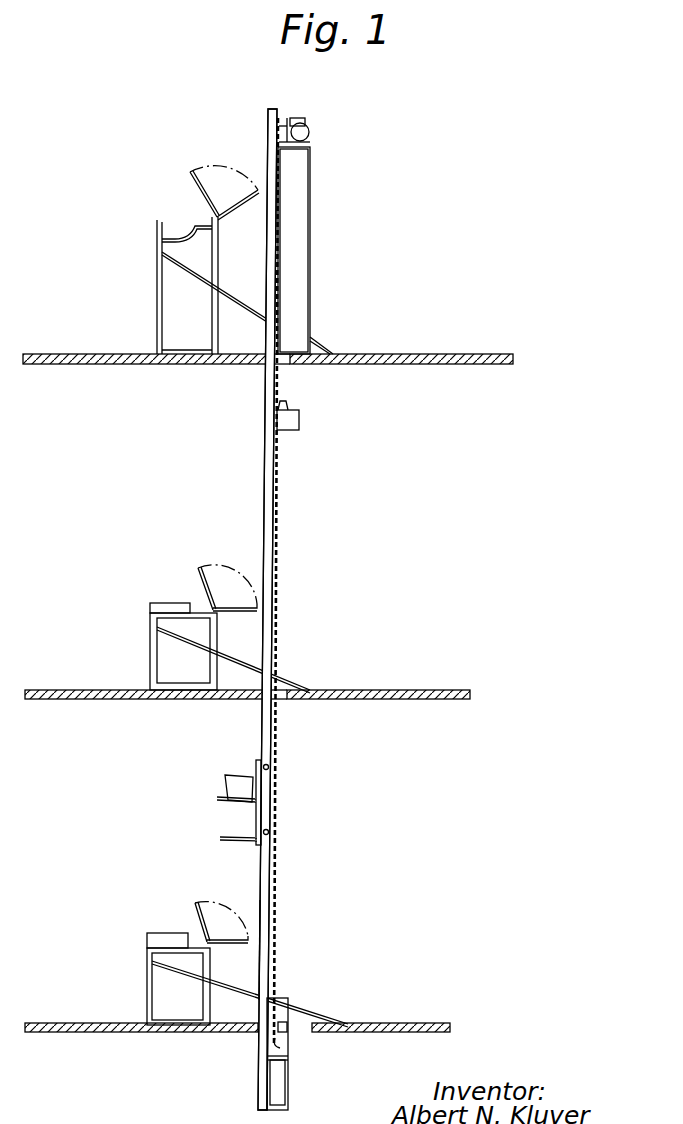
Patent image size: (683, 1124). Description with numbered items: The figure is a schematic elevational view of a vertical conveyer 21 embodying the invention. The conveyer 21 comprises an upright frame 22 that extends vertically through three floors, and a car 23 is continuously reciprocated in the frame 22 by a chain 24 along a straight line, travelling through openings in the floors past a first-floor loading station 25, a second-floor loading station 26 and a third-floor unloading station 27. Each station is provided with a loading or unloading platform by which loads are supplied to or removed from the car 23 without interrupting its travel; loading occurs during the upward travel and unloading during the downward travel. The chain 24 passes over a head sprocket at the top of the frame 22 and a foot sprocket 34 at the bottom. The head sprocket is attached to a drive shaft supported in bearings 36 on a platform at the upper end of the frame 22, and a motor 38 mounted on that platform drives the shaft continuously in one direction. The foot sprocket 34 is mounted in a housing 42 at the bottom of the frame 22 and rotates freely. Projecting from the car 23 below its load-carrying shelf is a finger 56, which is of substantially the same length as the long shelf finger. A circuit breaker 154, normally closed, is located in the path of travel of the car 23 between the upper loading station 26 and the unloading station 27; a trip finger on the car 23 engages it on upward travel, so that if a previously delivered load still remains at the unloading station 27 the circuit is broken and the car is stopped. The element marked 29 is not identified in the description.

The conveyer 21 is at (292, 566).
The frame 22 is at (265, 533).
The car 23 is at (233, 800).
The chain 24 is at (278, 875).
The loading station 25 is at (147, 975).
The loading station 26 is at (150, 650).
The unloading station 27 is at (158, 305).
The guide rail 29 is at (262, 933).
The foot sprocket 34 is at (282, 1045).
The bearings 36 is at (311, 186).
The motor 38 is at (306, 127).
The housing 42 is at (288, 1076).
The finger 56 is at (242, 841).
The circuit breaker 154 is at (299, 422).